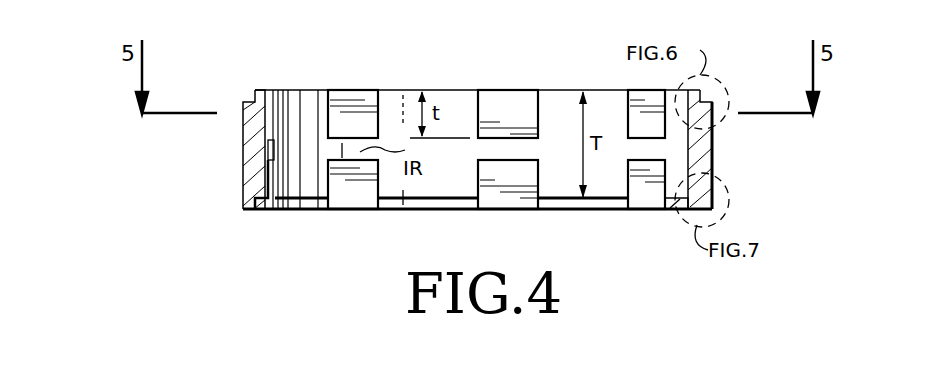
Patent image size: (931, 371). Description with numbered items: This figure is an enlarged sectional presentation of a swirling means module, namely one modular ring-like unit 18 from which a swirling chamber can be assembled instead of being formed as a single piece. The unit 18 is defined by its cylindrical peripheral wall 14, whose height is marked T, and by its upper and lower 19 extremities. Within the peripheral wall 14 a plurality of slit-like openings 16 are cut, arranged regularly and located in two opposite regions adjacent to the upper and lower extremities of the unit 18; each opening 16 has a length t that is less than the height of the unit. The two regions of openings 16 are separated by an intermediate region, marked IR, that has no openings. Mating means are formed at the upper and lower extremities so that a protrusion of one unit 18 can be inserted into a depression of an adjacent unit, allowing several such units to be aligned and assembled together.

The peripheral wall 14 is at (252, 165).
The openings 16 is at (343, 110).
The modular unit 18 is at (318, 218).
The lower extremity 19 is at (445, 212).